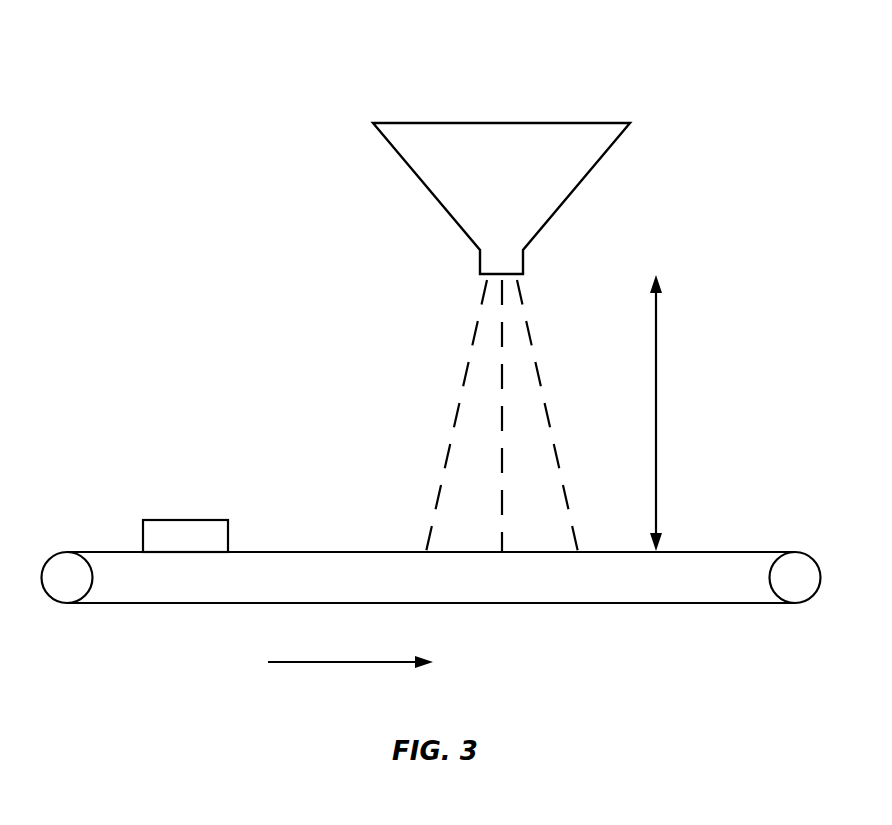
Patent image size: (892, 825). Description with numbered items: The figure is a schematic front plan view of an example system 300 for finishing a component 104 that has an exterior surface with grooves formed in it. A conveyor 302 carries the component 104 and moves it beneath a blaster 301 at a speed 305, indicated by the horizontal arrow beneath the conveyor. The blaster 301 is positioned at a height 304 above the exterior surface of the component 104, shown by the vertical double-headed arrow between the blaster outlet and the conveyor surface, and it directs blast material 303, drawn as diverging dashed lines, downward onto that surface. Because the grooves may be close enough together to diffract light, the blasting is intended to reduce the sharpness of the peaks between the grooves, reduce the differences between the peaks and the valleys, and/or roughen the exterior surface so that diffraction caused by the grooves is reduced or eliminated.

The system 300 is at (746, 78).
The blaster 301 is at (605, 157).
The conveyor 302 is at (803, 563).
The blast material 303 is at (528, 338).
The height 304 is at (659, 405).
The speed 305 is at (346, 665).
The component 104 is at (215, 533).